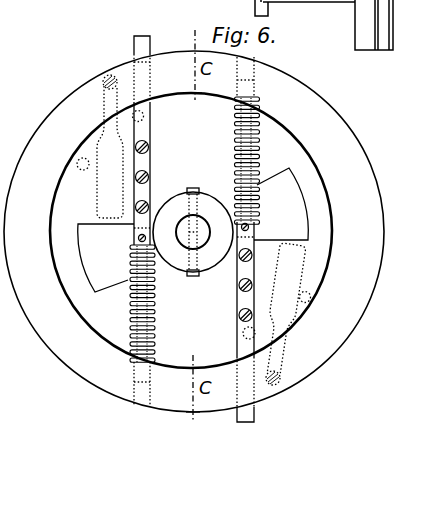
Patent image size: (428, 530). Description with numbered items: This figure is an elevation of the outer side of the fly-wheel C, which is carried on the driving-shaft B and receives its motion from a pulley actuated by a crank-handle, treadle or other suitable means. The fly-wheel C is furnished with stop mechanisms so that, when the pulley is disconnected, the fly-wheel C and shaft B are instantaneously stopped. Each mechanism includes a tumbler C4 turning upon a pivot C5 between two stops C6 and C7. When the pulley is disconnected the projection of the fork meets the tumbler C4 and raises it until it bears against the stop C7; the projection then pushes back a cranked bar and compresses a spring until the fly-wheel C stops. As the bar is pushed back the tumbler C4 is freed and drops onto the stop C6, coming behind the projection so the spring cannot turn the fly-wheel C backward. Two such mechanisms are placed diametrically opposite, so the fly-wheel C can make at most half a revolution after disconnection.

The driving-shaft B is at (202, 223).
The fly-wheel C is at (146, 110).
The tumbler C4 is at (201, 230).
The pivot C5 is at (281, 371).
The stop C6 is at (144, 117).
The stop C7 is at (85, 169).